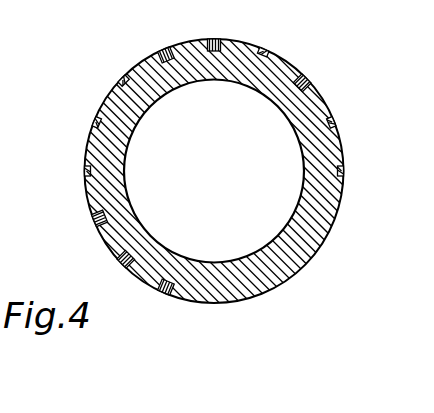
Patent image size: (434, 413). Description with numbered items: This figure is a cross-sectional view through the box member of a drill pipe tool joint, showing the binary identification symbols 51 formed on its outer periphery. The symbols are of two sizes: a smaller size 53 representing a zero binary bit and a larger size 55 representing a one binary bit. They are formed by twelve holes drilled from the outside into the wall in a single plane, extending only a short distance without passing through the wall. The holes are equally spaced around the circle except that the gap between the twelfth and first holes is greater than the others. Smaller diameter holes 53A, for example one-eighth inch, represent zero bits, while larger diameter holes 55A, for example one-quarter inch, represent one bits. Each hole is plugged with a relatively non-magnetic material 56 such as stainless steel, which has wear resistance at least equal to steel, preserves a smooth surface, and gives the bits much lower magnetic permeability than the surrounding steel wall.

The symbols 51 is at (72, 157).
The smaller size symbol 53 is at (124, 78).
The smaller diameter hole 53A is at (103, 101).
The larger size symbol 55 is at (166, 50).
The larger diameter hole 55A is at (200, 38).
The non-magnetic material 56 is at (96, 221).